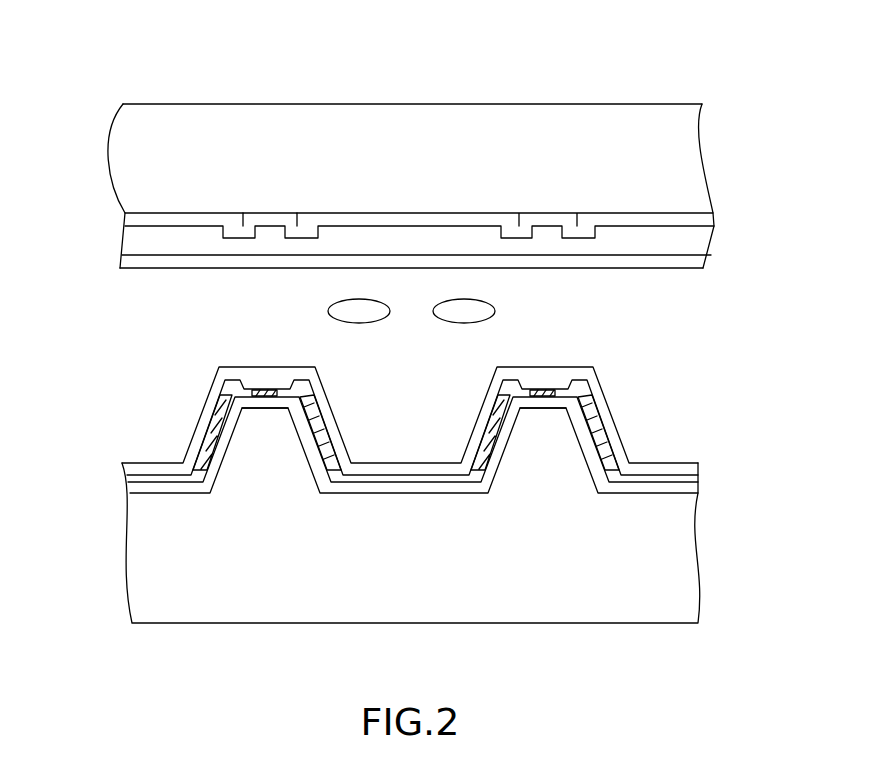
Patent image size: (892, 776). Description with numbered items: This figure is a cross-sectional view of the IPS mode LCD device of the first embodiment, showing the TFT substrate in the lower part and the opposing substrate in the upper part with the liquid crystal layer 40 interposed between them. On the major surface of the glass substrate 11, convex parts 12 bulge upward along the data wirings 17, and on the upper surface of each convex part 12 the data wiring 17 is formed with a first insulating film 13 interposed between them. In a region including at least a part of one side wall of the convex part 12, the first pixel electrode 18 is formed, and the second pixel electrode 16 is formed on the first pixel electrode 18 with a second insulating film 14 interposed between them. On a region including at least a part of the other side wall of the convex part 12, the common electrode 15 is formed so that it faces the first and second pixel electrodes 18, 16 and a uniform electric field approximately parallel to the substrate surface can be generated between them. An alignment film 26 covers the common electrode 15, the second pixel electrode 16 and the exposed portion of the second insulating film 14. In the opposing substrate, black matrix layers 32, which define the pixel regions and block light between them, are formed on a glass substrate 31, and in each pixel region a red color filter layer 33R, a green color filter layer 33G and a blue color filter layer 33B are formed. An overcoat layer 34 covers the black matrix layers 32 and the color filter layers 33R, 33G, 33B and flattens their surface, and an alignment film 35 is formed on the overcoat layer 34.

The glass substrate 11 is at (700, 509).
The convex part 12 is at (268, 422).
The first insulating film 13 is at (700, 481).
The second insulating film 14 is at (413, 477).
The common electrode 15 is at (212, 393).
The second pixel electrode 16 is at (312, 391).
The data wiring 17 is at (270, 390).
The first pixel electrode 18 is at (320, 437).
The alignment film 26 is at (685, 463).
The glass substrate 31 is at (692, 146).
The black matrix layer 32 is at (273, 218).
The red color filter layer 33R is at (125, 214).
The green color filter layer 33G is at (415, 220).
The blue color filter layer 33B is at (714, 213).
The overcoat layer 34 is at (710, 246).
The alignment film 35 is at (686, 262).
The liquid crystal layer 40 is at (378, 306).